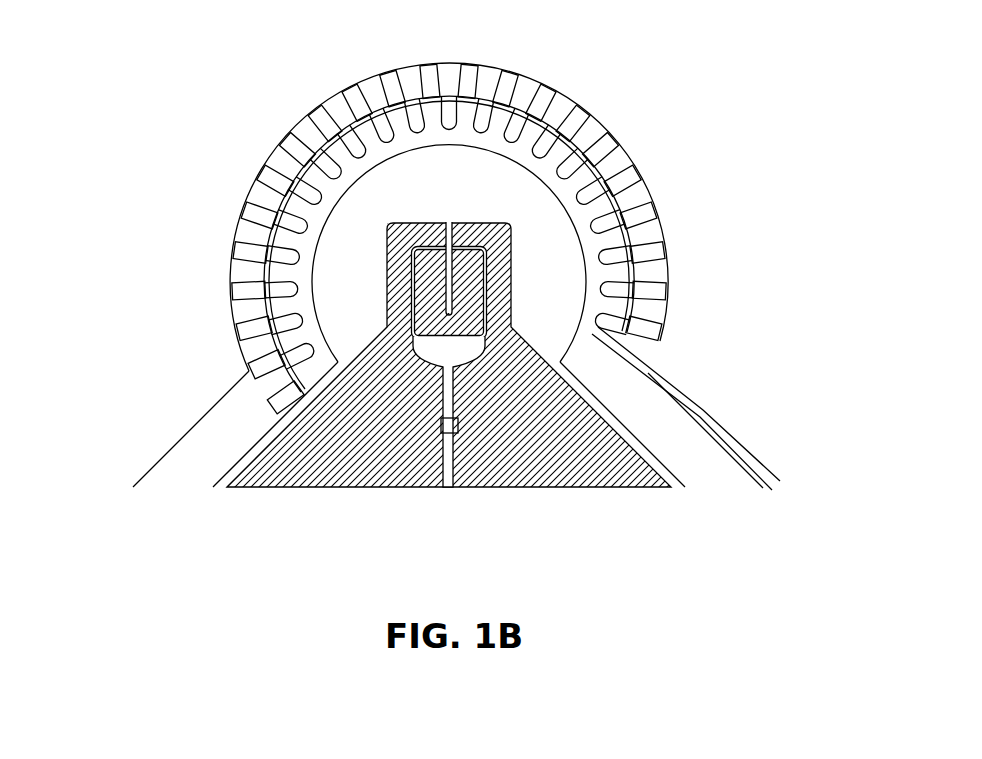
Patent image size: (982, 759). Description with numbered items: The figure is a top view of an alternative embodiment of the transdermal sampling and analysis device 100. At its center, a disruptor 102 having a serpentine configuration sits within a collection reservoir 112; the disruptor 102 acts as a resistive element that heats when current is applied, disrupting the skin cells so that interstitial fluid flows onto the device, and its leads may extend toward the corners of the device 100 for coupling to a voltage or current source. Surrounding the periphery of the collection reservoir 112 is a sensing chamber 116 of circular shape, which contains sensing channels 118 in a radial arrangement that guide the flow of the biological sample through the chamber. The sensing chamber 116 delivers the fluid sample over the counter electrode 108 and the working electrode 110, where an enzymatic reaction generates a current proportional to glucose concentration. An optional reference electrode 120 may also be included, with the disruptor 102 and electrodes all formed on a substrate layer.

The transdermal sampling and analysis device 100 is at (707, 81).
The disruptor 102 is at (325, 492).
The counter electrode 108 is at (181, 481).
The working electrode 110 is at (690, 453).
The collection reservoir 112 is at (460, 201).
The sensing chamber 116 is at (658, 272).
The sensing channels 118 is at (263, 267).
The reference electrode 120 is at (703, 412).